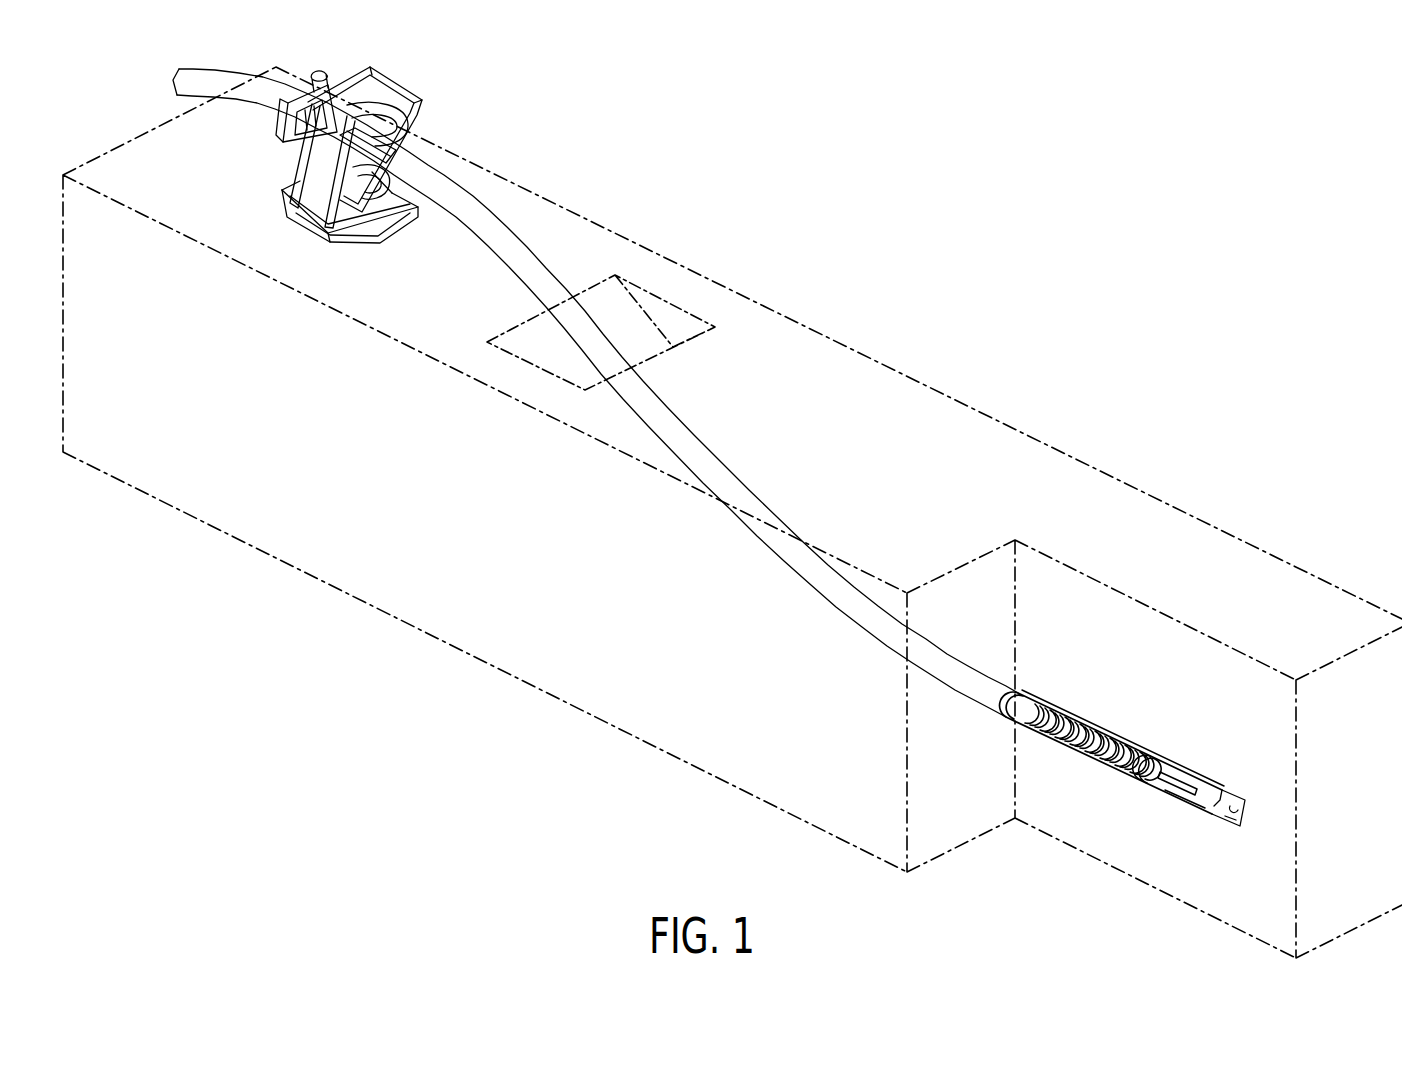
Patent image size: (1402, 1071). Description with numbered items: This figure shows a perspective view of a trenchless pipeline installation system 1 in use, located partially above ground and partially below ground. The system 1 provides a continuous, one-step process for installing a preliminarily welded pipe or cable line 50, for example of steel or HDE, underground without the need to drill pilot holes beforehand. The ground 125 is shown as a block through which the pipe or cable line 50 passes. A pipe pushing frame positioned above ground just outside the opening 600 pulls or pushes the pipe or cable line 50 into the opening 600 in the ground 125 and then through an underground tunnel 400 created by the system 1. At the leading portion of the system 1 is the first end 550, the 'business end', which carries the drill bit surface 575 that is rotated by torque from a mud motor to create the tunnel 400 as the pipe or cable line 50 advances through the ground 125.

The trenchless pipeline installation system 1 is at (748, 218).
The pipe or cable line 50 is at (595, 392).
The ground 125 is at (987, 455).
The underground tunnel 400 is at (690, 430).
The first end 550 is at (1142, 787).
The drill bit surface 575 is at (1243, 795).
The opening 600 is at (535, 367).